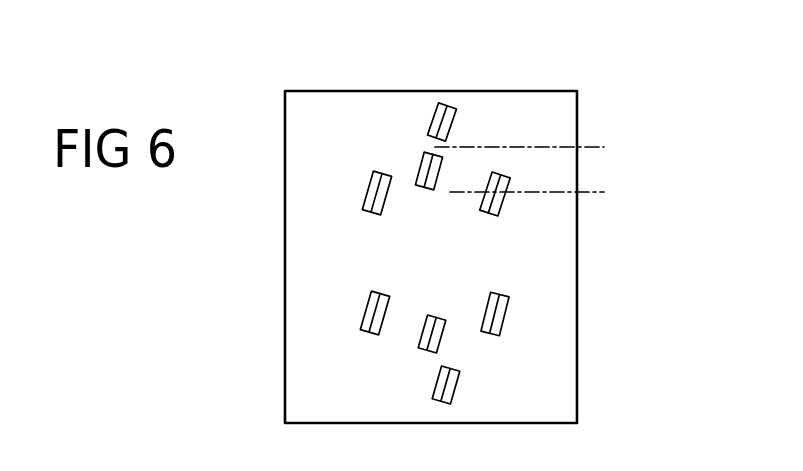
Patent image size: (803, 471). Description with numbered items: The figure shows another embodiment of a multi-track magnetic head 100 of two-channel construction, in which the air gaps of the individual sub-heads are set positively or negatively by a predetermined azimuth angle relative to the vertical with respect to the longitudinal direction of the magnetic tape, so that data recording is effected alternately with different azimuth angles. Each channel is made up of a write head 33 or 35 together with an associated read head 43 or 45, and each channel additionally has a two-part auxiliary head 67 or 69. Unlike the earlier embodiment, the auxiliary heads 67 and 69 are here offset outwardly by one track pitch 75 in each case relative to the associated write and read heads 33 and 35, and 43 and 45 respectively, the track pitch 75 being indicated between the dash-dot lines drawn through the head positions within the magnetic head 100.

The write head 33 is at (505, 315).
The write head 35 is at (371, 206).
The read head 43 is at (243, 348).
The read head 45 is at (490, 209).
The auxiliary head 67 is at (435, 374).
The auxiliary head 69 is at (433, 129).
The track pitch 75 is at (599, 112).
The magnetic head 100 is at (295, 391).